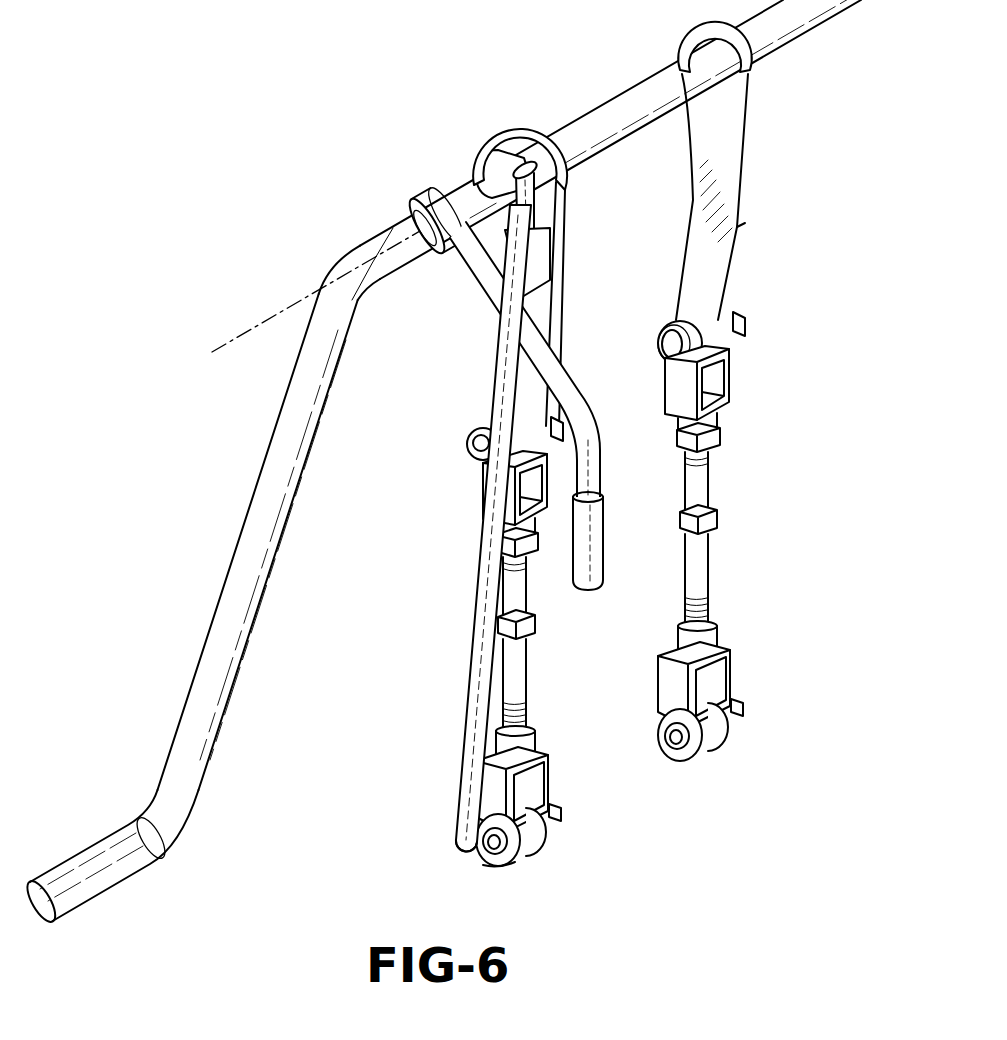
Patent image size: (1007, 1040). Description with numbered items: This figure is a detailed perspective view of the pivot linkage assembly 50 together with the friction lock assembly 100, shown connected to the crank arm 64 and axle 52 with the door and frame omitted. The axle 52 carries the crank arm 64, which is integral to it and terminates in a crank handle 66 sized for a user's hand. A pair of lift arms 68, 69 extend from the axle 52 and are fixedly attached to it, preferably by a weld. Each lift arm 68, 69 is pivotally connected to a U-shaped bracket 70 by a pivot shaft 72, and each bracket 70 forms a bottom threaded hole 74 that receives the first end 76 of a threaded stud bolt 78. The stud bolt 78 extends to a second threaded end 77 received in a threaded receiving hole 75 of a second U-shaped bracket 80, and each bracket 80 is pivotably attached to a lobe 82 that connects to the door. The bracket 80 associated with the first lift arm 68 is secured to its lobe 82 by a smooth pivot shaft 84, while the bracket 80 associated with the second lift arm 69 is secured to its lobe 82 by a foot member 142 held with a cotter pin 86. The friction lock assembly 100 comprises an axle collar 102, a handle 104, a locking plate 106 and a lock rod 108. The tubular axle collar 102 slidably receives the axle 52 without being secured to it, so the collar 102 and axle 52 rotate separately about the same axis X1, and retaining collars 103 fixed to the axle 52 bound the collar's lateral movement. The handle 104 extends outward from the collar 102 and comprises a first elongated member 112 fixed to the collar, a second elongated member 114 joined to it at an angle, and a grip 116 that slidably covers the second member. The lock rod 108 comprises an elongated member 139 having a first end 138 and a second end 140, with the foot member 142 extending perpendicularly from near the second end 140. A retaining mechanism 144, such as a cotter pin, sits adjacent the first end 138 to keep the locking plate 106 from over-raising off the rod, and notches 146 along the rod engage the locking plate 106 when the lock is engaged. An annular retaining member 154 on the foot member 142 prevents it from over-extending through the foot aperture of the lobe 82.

The pivot linkage assembly 50 is at (752, 297).
The axle 52 is at (636, 97).
The crank arm 64 is at (245, 556).
The crank handle 66 is at (93, 858).
The first lift arm 68 is at (738, 190).
The second lift arm 69 is at (560, 308).
The U-shaped bracket 70 is at (735, 374).
The pivot shaft 72 is at (660, 352).
The bottom threaded hole 74 is at (720, 446).
The threaded receiving hole 75 is at (718, 635).
The first end 76 is at (684, 462).
The second threaded end 77 is at (712, 605).
The threaded stud bolt 78 is at (718, 520).
The second U-shaped bracket 80 is at (732, 676).
The lobe 82 is at (639, 808).
The smooth pivot shaft 84 is at (668, 744).
The cotter pin 86 is at (560, 824).
The friction lock assembly 100 is at (478, 290).
The axle collar 102 is at (462, 178).
The retaining collar 103 is at (420, 205).
The handle 104 is at (561, 448).
The locking plate 106 is at (565, 272).
The lock rod 108 is at (412, 528).
The first elongated member 112 is at (570, 387).
The second elongated member 114 is at (600, 480).
The grip 116 is at (606, 566).
The first end 138 is at (538, 135).
The elongated member 139 is at (478, 669).
The second end 140 is at (463, 838).
The foot member 142 is at (555, 812).
The retaining mechanism 144 is at (492, 158).
The notches 146 is at (412, 528).
The annular retaining member 154 is at (499, 864).
The axis X1 is at (232, 343).